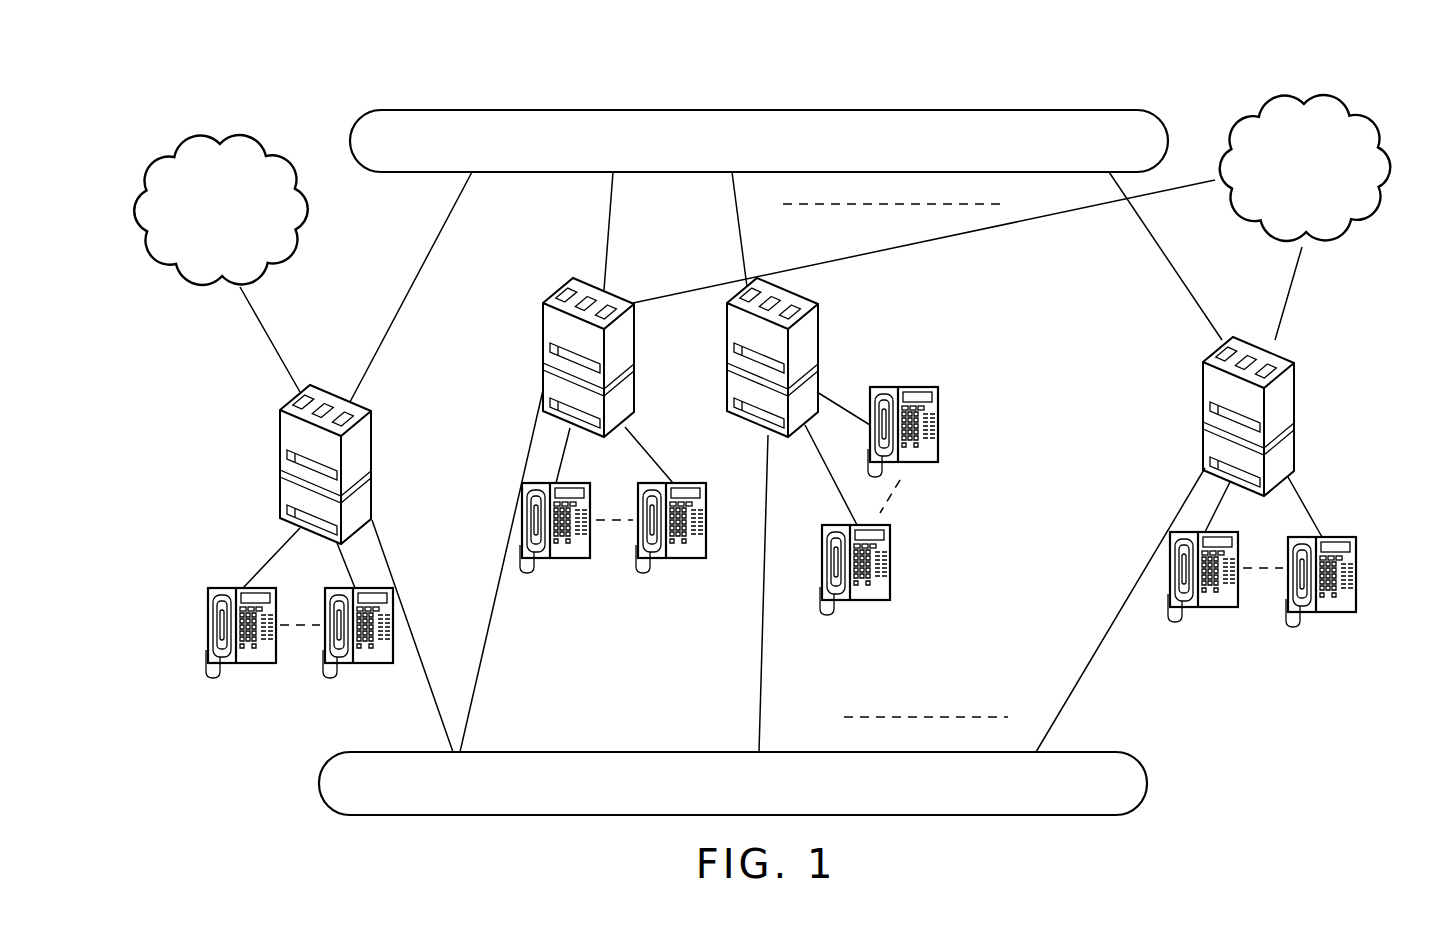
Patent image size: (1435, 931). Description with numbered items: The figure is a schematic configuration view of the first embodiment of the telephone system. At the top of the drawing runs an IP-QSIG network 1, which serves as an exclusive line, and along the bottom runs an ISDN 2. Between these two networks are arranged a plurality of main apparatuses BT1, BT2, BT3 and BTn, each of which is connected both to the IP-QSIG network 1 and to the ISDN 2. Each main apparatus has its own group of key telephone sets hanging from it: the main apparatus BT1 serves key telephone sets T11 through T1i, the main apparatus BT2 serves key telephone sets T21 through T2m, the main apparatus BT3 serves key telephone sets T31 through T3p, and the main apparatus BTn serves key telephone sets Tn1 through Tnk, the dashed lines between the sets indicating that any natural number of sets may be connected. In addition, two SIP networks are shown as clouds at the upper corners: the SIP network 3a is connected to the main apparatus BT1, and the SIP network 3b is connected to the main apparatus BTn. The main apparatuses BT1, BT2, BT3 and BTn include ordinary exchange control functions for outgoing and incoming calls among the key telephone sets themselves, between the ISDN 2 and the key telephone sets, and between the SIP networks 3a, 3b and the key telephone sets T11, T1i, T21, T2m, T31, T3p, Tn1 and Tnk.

The IP-QSIG network 1 is at (795, 110).
The ISDN 2 is at (1148, 783).
The SIP network 3a is at (182, 140).
The SIP network 3b is at (1330, 100).
The main apparatus BT1 is at (280, 478).
The main apparatus BT2 is at (543, 372).
The main apparatus BT3 is at (818, 340).
The main apparatus BTn is at (1294, 428).
The key telephone set T11 is at (256, 664).
The key telephone set T1i is at (372, 664).
The key telephone set T21 is at (566, 559).
The key telephone set T2m is at (682, 559).
The key telephone set T3p is at (939, 421).
The key telephone set T31 is at (866, 601).
The key telephone set Tn1 is at (1214, 608).
The key telephone set Tnk is at (1327, 613).